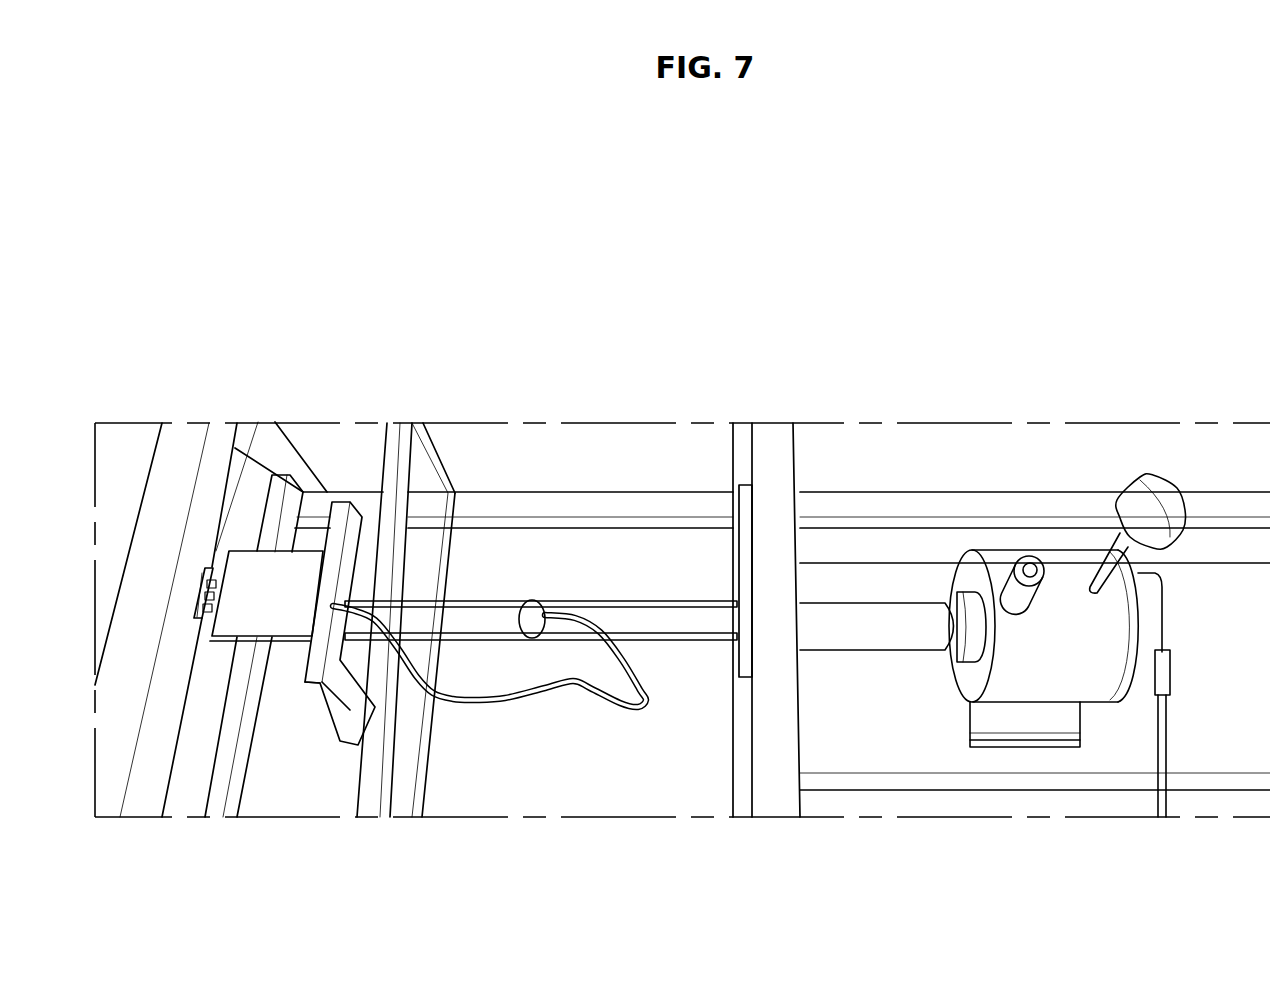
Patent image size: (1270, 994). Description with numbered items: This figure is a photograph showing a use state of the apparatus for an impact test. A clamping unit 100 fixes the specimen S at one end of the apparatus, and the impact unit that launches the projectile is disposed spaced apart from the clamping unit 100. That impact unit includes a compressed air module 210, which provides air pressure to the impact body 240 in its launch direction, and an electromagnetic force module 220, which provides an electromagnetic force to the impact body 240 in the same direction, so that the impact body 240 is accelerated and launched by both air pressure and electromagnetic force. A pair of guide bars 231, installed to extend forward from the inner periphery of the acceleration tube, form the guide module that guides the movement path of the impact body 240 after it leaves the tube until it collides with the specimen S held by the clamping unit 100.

The specimen S is at (247, 567).
The clamping unit 100 is at (342, 522).
The compressed air module 210 is at (1068, 577).
The electromagnetic force module 220 is at (903, 627).
The guide bars 231 is at (467, 607).
The impact body 240 is at (530, 632).